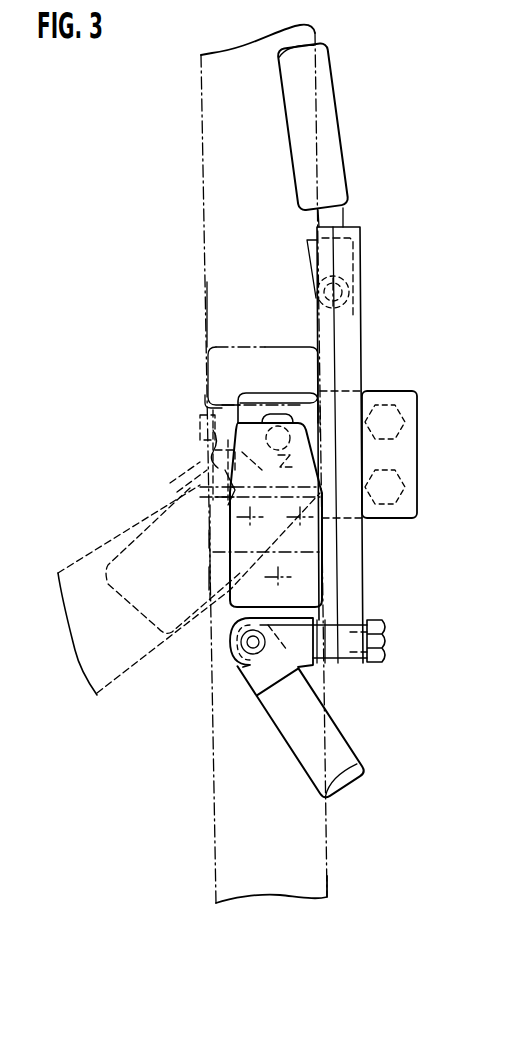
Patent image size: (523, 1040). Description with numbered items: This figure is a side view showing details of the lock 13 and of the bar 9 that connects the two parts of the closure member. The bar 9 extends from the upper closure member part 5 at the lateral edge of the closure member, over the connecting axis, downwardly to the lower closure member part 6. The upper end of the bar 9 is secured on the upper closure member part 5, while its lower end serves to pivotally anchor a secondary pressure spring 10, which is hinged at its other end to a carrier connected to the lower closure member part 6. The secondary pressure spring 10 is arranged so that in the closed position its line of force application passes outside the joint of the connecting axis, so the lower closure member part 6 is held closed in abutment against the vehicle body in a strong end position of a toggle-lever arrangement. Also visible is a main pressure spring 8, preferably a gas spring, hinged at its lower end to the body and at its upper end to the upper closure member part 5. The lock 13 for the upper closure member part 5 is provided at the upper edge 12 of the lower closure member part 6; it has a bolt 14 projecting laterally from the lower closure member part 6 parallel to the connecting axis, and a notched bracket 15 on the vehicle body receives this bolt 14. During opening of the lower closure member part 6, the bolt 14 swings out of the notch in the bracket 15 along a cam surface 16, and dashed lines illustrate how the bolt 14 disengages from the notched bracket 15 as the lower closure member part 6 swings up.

The upper closure member part 5 is at (263, 169).
The lower closure member part 6 is at (113, 667).
The main pressure spring 8 is at (337, 178).
The bar 9 is at (347, 333).
The secondary pressure spring 10 is at (337, 747).
The upper edge 12 is at (320, 486).
The lock 13 is at (262, 318).
The bolt 14 is at (281, 400).
The notched bracket 15 is at (325, 432).
The cam surface 16 is at (198, 402).